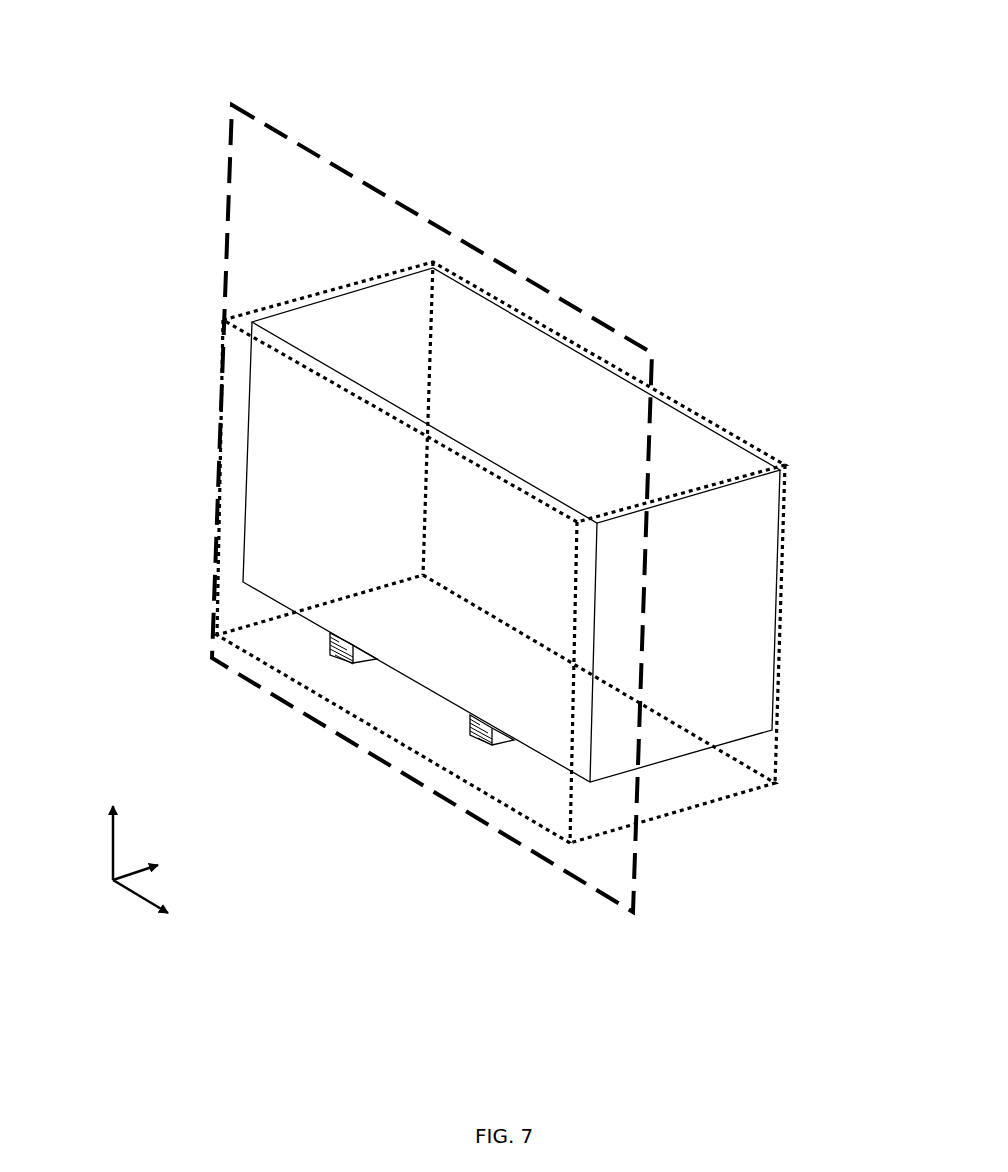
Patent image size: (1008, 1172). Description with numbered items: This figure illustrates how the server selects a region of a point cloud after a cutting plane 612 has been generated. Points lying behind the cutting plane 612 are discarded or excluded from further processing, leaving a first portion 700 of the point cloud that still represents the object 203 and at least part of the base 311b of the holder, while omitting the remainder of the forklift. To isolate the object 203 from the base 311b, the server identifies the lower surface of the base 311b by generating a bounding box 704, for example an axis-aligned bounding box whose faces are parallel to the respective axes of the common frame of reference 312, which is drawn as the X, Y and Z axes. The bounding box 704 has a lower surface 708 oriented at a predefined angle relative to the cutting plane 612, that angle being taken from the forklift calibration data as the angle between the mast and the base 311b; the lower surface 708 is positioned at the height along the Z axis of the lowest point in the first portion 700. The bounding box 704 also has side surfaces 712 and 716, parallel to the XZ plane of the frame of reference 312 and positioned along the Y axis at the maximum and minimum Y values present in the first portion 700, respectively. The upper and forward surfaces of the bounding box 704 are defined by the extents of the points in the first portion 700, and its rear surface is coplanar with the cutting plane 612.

The first portion 700 is at (452, 98).
The cutting plane 612 is at (597, 325).
The side surface 716 is at (243, 366).
The object 203 is at (317, 461).
The side surface 712 is at (739, 596).
The lower surface 708 is at (745, 782).
The bounding box 704 is at (703, 815).
The base 311b is at (483, 745).
The common frame of reference 312 is at (122, 892).